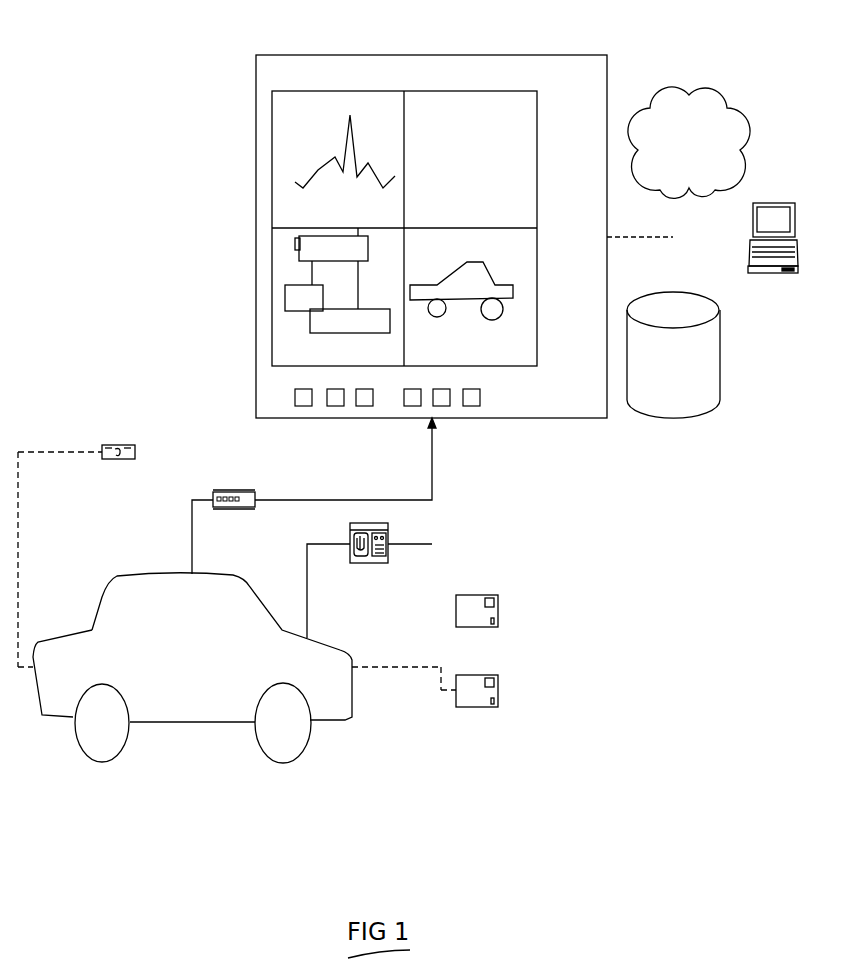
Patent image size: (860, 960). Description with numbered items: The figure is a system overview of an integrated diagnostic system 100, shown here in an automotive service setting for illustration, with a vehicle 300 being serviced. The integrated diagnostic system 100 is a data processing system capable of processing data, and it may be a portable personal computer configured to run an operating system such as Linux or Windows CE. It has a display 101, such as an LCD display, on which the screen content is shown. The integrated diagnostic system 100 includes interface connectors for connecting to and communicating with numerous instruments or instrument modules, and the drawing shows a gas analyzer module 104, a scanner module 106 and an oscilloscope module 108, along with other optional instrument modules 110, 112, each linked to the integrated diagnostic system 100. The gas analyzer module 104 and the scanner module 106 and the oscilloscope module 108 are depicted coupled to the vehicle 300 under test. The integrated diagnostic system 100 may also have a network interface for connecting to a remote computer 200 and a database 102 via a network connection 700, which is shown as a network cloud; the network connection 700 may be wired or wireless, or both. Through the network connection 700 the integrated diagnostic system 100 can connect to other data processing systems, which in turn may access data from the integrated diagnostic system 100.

The integrated diagnostic system 100 is at (552, 459).
The display 101 is at (305, 103).
The database 102 is at (770, 419).
The gas analyzer module 104 is at (128, 518).
The scanner module 106 is at (277, 550).
The oscilloscope module 108 is at (447, 573).
The optional instrument module 110 is at (568, 630).
The optional instrument module 112 is at (528, 730).
The remote computer 200 is at (848, 291).
The vehicle 300 is at (250, 788).
The network connection 700 is at (647, 238).